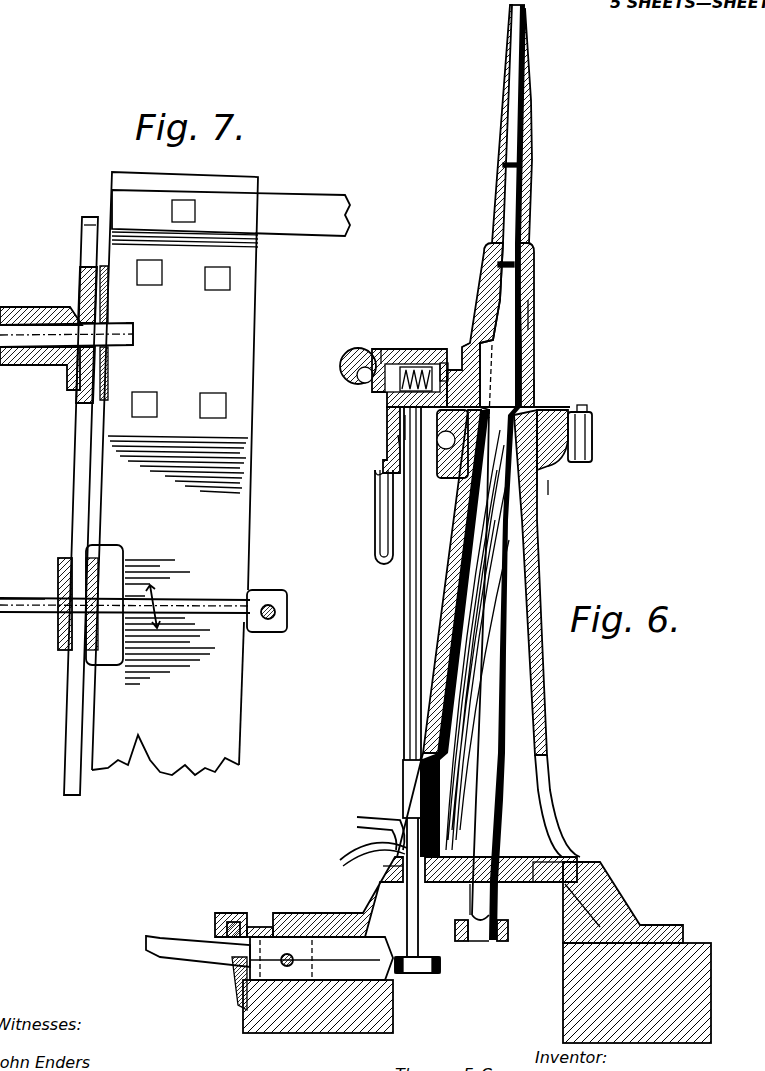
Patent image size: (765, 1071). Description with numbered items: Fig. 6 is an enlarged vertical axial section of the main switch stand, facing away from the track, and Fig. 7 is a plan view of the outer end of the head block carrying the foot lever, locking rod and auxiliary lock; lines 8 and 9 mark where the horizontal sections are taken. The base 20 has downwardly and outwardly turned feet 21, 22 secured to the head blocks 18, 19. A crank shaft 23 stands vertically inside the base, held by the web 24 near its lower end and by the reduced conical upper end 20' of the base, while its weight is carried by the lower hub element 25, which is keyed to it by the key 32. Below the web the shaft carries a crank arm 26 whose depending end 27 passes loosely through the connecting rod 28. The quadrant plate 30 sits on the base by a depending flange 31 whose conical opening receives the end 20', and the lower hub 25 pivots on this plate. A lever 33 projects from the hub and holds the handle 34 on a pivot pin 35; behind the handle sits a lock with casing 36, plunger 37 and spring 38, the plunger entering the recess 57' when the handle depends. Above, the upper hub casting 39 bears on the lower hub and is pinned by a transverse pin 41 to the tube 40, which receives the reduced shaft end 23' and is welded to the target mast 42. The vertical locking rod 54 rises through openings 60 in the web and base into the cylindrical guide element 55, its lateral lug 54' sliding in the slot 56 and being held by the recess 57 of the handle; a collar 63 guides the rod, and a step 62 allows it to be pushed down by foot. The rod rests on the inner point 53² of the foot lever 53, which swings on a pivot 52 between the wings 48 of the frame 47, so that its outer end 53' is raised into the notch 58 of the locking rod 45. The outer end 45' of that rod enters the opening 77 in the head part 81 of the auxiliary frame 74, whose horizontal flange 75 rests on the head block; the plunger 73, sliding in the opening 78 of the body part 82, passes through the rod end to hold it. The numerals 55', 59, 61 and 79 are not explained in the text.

In FIG. 6, the section line 8 is at (538, 358).
In FIG. 6, the section line 9 is at (598, 412).
In FIG. 6, the head block 18 is at (697, 987).
In FIG. 7, the head block 19 is at (170, 605).
In FIG. 6, the head block 19 is at (298, 1020).
In FIG. 6, the base of the switch stand 20 is at (505, 633).
In FIG. 6, the reduced upper end of the base 20' is at (523, 565).
In FIG. 6, the foot 21 is at (662, 928).
In FIG. 6, the foot 22 is at (292, 915).
In FIG. 6, the crank shaft 23 is at (500, 472).
In FIG. 6, the reduced upper end of the shaft 23' is at (557, 315).
In FIG. 6, the web 24 is at (512, 863).
In FIG. 6, the lower hub element 25 is at (534, 395).
In FIG. 6, the crank arm 26 is at (470, 900).
In FIG. 6, the depending outer end of the crank arm 27 is at (478, 940).
In FIG. 6, the connecting rod 28 is at (508, 930).
In FIG. 6, the quadrant plate 30 is at (548, 462).
In FIG. 6, the depending flange 31 is at (538, 478).
In FIG. 6, the key 32 is at (476, 342).
In FIG. 6, the lever 33 is at (372, 354).
In FIG. 6, the handle 34 is at (378, 523).
In FIG. 6, the pivot pin 35 is at (341, 373).
In FIG. 6, the casing 36 is at (420, 372).
In FIG. 6, the plunger 37 is at (400, 368).
In FIG. 6, the spring 38 is at (443, 366).
In FIG. 6, the upper hub casting 39 is at (534, 288).
In FIG. 6, the tubing section 40 is at (530, 222).
In FIG. 6, the transverse pin 41 is at (490, 262).
In FIG. 6, the target mast 42 is at (512, 33).
In FIG. 7, the locking rod 45 is at (61, 506).
In FIG. 6, the locking rod 45 is at (211, 923).
In FIG. 7, the outer end of the locking rod 45' is at (70, 214).
In FIG. 7, the foot lever locking frame 47 is at (110, 548).
In FIG. 6, the foot lever locking frame 47 is at (247, 913).
In FIG. 7, the guide and fastening wings 48 is at (158, 606).
In FIG. 6, the pivot 52 is at (281, 960).
In FIG. 7, the foot lever 53 is at (125, 624).
In FIG. 6, the foot lever 53 is at (321, 958).
In FIG. 7, the outer end of the foot lever 53' is at (22, 622).
In FIG. 6, the outer end of the foot lever 53' is at (198, 960).
In FIG. 7, the vertical locking rod 54 is at (271, 633).
In FIG. 6, the vertical locking rod 54 is at (409, 682).
In FIG. 6, the lateral lug 54' is at (344, 495).
In FIG. 6, the cylindrical guide element 55 is at (365, 451).
In FIG. 6, the clip 55' is at (602, 442).
In FIG. 6, the vertical slot 56 is at (592, 440).
In FIG. 6, the recess 57 is at (370, 453).
In FIG. 6, the recess 57' is at (388, 331).
In FIG. 6, the notch 58 is at (220, 962).
In FIG. 6, the lever 59 is at (393, 857).
In FIG. 6, the openings 60 is at (383, 865).
In FIG. 7, the clamp block 61 is at (58, 565).
In FIG. 6, the clamp block 61 is at (222, 913).
In FIG. 6, the projection or step 62 is at (372, 819).
In FIG. 6, the collar 63 is at (455, 468).
In FIG. 7, the plunger 73 is at (22, 330).
In FIG. 7, the auxiliary interlocking frame 74 is at (70, 309).
In FIG. 7, the horizontal flange 75 is at (175, 471).
In FIG. 7, the opening 77 is at (82, 272).
In FIG. 7, the opening 78 is at (112, 327).
In FIG. 7, the rail 79 is at (231, 213).
In FIG. 7, the head part of the T element 81 is at (108, 300).
In FIG. 7, the body part of the T element 82 is at (14, 352).